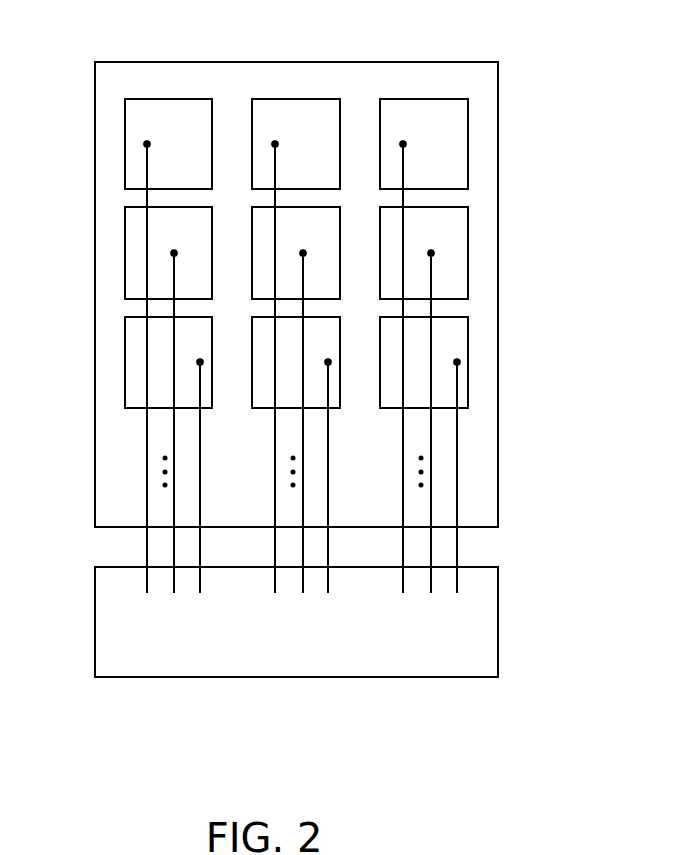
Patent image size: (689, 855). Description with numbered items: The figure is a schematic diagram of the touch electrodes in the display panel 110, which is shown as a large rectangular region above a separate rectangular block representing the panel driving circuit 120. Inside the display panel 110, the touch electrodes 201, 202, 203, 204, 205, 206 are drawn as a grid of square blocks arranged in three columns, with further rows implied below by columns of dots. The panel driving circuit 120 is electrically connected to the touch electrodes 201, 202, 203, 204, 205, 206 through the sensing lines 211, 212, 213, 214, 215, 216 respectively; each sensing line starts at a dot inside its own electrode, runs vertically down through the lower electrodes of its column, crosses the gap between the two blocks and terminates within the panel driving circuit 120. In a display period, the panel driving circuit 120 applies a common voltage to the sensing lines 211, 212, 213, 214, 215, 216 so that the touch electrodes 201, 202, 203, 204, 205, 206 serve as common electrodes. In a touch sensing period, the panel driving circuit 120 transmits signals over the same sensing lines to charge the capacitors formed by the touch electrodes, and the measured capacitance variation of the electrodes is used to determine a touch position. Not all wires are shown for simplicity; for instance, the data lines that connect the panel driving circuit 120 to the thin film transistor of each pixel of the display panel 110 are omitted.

The display panel 110 is at (498, 350).
The panel driving circuit 120 is at (498, 623).
The touch electrode 201 is at (167, 99).
The touch electrode 202 is at (296, 99).
The touch electrode 203 is at (424, 99).
The touch electrode 204 is at (125, 255).
The touch electrode 205 is at (252, 272).
The touch electrode 206 is at (468, 254).
The sensing line 211 is at (146, 548).
The sensing line 212 is at (273, 592).
The sensing line 213 is at (402, 592).
The sensing line 214 is at (174, 581).
The sensing line 215 is at (303, 592).
The sensing line 216 is at (430, 592).